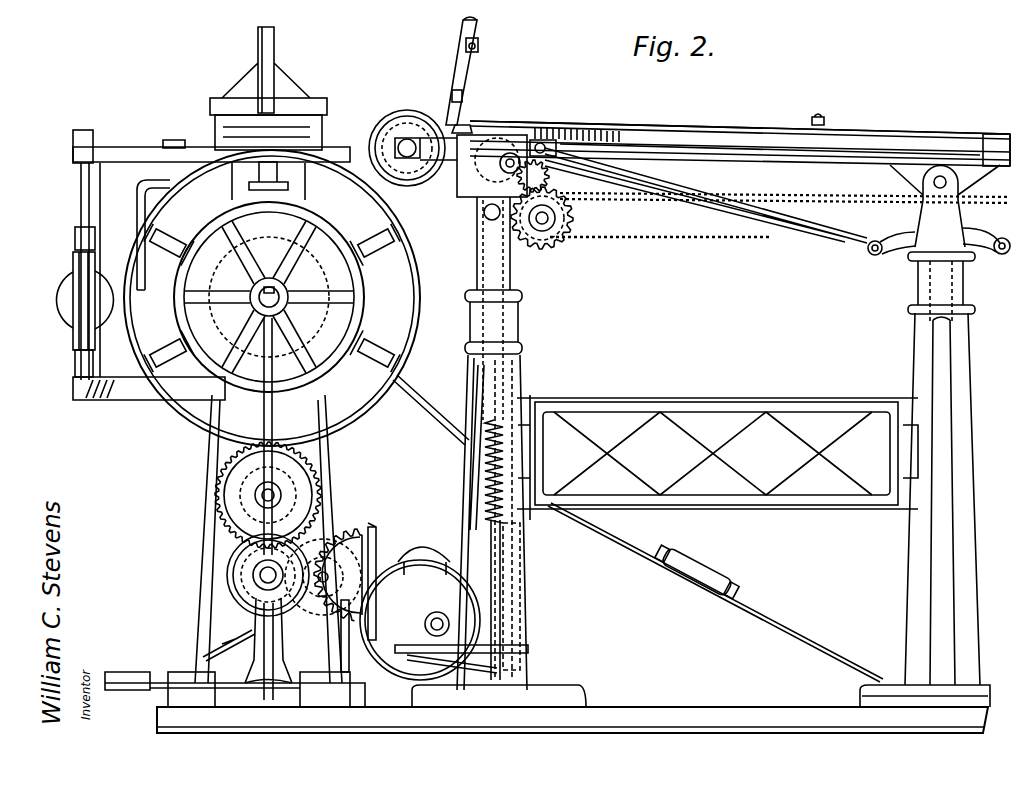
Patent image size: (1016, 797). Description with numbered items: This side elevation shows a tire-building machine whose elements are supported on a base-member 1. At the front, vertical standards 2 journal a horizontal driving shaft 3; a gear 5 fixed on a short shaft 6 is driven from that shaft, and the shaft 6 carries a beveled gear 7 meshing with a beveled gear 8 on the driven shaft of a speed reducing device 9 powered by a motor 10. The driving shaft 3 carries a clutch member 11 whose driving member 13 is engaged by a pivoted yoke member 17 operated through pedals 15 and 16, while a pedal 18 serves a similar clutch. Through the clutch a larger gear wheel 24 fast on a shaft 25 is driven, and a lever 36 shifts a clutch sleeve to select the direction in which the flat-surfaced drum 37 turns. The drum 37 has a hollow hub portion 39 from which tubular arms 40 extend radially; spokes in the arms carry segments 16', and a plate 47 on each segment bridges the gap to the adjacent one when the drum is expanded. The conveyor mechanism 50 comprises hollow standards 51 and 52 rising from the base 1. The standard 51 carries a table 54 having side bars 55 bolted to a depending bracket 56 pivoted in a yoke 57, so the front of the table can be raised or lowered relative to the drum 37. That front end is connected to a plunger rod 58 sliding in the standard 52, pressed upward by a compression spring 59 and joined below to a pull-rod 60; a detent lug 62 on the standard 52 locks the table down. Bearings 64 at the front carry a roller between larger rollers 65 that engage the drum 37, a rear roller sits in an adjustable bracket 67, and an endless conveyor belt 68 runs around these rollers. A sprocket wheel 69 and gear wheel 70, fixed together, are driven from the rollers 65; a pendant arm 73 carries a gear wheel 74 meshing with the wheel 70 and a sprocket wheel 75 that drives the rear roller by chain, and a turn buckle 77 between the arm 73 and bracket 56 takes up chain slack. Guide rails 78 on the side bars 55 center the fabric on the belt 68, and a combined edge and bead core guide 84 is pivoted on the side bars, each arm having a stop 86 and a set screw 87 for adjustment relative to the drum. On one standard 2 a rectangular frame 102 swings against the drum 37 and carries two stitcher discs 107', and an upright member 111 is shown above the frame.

The base-member 1 is at (547, 708).
The vertical standards 2 is at (210, 468).
The horizontal driving shaft 3 is at (260, 580).
The gear 5 is at (353, 540).
The short shaft 6 is at (320, 600).
The beveled gear 7 is at (347, 615).
The beveled gear 8 is at (378, 527).
The speed reducing device 9 is at (436, 545).
The motor 10 is at (420, 620).
The clutch member 11 is at (226, 577).
The driving member 13 is at (250, 566).
The pedal 15 is at (269, 446).
The pedal 16 is at (259, 458).
The brace rod 16' is at (431, 353).
The pivoted yoke member 17 is at (229, 636).
The pedal 18 is at (225, 677).
The larger gear wheel 24 is at (230, 498).
The shaft 25 is at (255, 495).
The lever 36 is at (137, 212).
The drum 37 is at (289, 297).
The hollow hub portion 39 is at (165, 297).
The tubular arms 40 is at (370, 236).
The plate 47 is at (424, 307).
The arm 50 is at (740, 135).
The hollow standard 51 is at (906, 573).
The hollow standard 52 is at (520, 362).
The table 54 is at (740, 152).
The side bars 55 is at (857, 140).
The bracket 56 is at (890, 217).
The yoke 57 is at (910, 248).
The plunger rod 58 is at (512, 276).
The compression spring 59 is at (470, 455).
The pull-rod 60 is at (490, 577).
The detent lug 62 is at (520, 648).
The bearings 64 is at (385, 130).
The rollers 65 is at (408, 110).
The bracket 67 is at (440, 660).
The endless conveyor belt 68 is at (810, 196).
The sprocket wheel 69 is at (470, 198).
The gear wheel 70 is at (543, 172).
The pendant arm 73 is at (558, 240).
The gear wheel 74 is at (575, 222).
The sprocket wheel 75 is at (580, 238).
The turn buckle 77 is at (690, 240).
The guide rails 78 is at (737, 118).
The combined edge guide and bead core guide 84 is at (454, 71).
The stop 86 is at (462, 120).
The set screw 87 is at (466, 95).
The rectangular frame 102 is at (72, 267).
The stitcher discs 107' is at (59, 300).
The post 111 is at (275, 34).